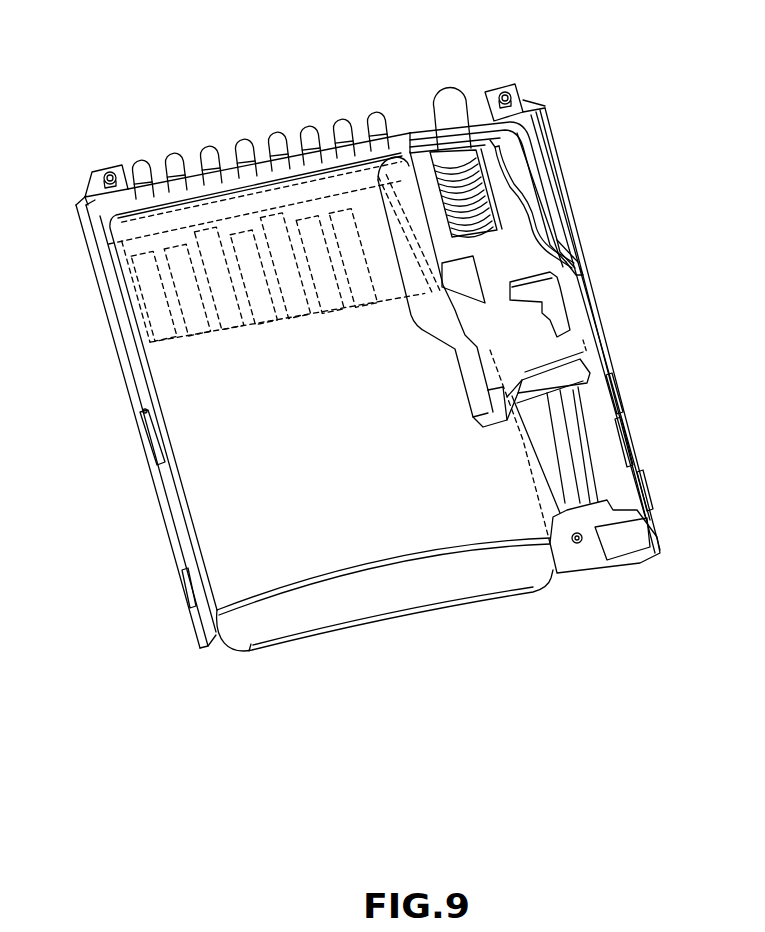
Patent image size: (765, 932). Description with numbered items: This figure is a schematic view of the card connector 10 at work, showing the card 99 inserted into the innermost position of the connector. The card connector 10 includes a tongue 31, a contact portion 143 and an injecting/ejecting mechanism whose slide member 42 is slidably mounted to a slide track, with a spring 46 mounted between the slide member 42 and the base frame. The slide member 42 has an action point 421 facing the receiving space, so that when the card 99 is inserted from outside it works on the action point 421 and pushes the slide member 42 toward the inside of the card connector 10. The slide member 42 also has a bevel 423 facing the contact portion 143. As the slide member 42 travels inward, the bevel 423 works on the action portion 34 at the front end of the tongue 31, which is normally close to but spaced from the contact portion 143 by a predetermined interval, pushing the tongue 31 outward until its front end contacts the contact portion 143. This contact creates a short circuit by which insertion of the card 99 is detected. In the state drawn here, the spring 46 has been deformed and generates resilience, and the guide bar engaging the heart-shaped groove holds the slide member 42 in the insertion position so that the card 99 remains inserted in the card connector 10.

The card connector 10 is at (188, 652).
The card 99 is at (213, 512).
The spring 46 is at (462, 158).
The tongue 31 is at (545, 220).
The bevel 423 is at (522, 197).
The action portion 34 is at (573, 235).
The contact portion 143 is at (590, 290).
The action point 421 is at (455, 318).
The slide member 42 is at (595, 388).